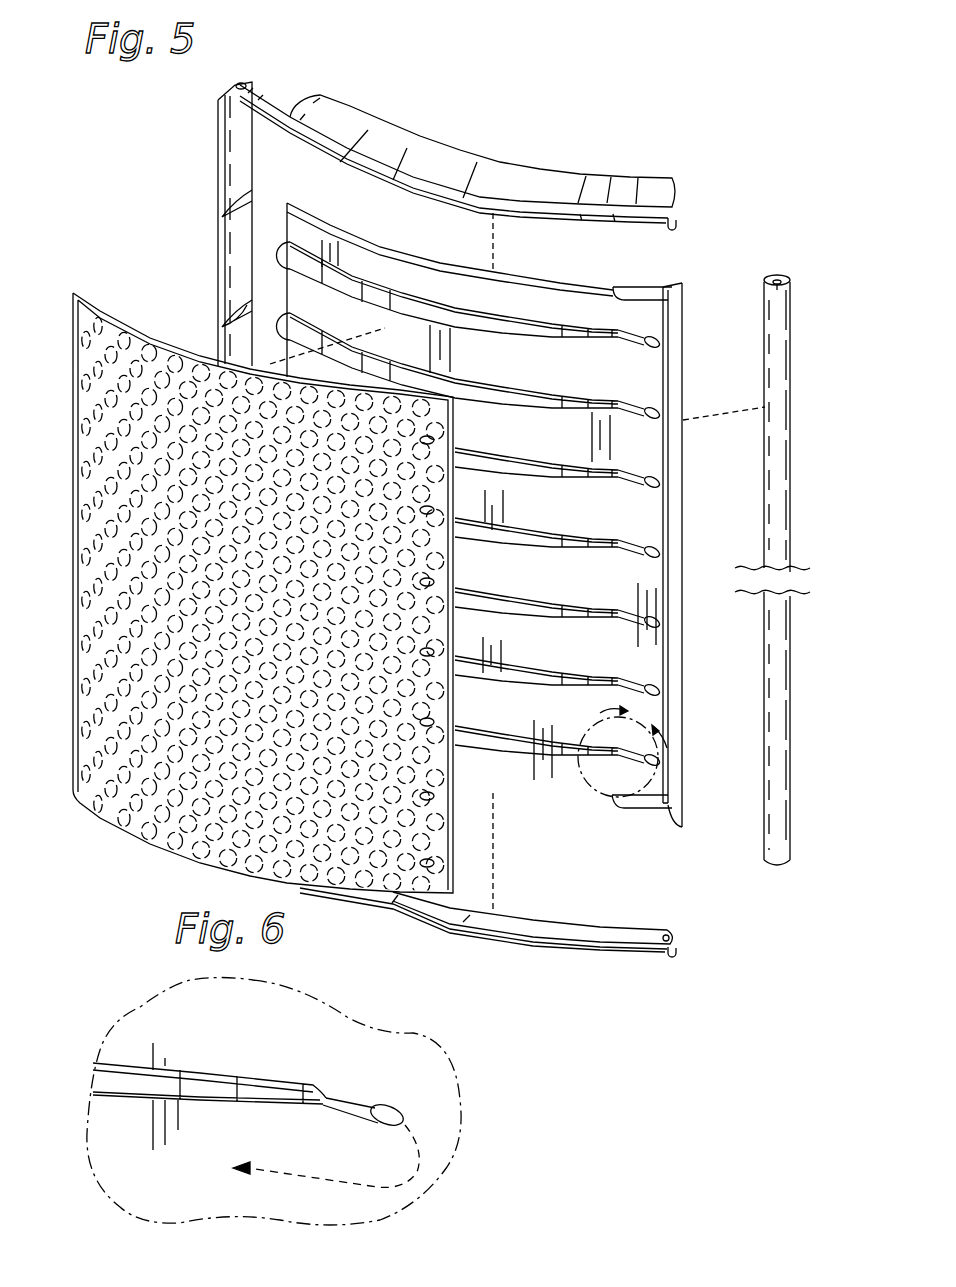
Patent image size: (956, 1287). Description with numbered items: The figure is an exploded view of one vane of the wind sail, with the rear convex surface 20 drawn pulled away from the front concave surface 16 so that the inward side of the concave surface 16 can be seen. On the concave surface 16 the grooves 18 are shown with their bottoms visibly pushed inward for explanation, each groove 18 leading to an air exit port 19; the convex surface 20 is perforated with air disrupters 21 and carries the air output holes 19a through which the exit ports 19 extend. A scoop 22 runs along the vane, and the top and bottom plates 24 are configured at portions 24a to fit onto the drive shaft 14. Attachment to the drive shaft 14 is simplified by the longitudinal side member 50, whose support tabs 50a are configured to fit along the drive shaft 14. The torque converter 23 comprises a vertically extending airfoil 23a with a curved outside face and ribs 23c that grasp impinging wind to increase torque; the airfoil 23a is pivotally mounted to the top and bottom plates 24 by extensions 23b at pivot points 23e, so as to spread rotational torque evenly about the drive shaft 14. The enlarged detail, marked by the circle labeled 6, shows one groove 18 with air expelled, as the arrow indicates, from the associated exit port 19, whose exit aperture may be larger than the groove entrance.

In FIG. 5, the drive shaft 14 is at (789, 323).
In FIG. 5, the front concave surface 16 is at (545, 297).
In FIG. 6, the front concave surface 16 is at (170, 1020).
In FIG. 5, the grooves 18 is at (290, 258).
In FIG. 6, the grooves 18 is at (275, 1087).
In FIG. 5, the air exit ports 19 is at (656, 413).
In FIG. 6, the air exit ports 19 is at (393, 1110).
In FIG. 5, the air output holes 19a is at (436, 440).
In FIG. 5, the rear convex surface 20 is at (114, 800).
In FIG. 5, the air disrupters 21 is at (98, 345).
In FIG. 5, the scoop 22 is at (503, 170).
In FIG. 5, the torque converter 23 is at (200, 108).
In FIG. 5, the airfoil 23a is at (218, 179).
In FIG. 5, the extensions 23b is at (290, 107).
In FIG. 5, the ribs 23c is at (228, 340).
In FIG. 5, the pivot points 23e is at (246, 82).
In FIG. 5, the top and bottom plates 24 is at (290, 134).
In FIG. 5, the plate fitting portion 24a is at (668, 214).
In FIG. 5, the longitudinal side member 50 is at (683, 312).
In FIG. 5, the support tabs 50a is at (632, 286).
In FIG. 5, the detail view circle 6 is at (622, 747).